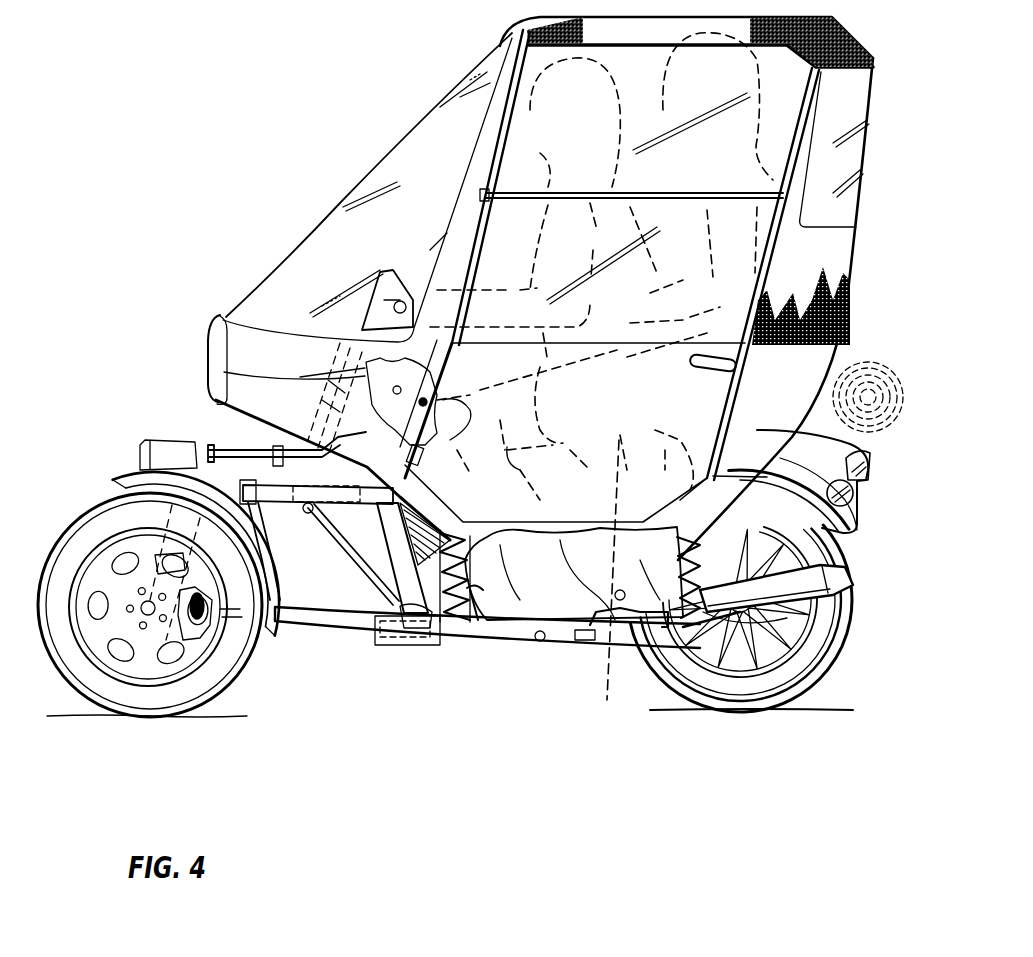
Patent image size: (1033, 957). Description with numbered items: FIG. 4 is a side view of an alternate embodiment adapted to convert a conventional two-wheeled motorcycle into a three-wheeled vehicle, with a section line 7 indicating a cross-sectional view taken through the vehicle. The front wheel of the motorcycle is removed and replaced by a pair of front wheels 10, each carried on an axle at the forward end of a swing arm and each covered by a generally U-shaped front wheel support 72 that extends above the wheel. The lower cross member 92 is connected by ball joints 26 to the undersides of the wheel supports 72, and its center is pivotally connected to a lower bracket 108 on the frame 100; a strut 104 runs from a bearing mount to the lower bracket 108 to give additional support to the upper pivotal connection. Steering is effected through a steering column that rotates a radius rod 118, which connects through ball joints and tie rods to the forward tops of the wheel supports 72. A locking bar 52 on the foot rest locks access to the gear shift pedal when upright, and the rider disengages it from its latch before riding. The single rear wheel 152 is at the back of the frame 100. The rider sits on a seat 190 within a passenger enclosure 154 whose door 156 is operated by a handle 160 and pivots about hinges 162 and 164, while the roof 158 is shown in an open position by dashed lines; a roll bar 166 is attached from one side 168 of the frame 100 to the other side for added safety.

The front wheel 10 is at (50, 550).
The ball joint 26 is at (203, 617).
The locking bar 52 is at (612, 660).
The front wheel support 72 is at (263, 541).
The lower cross member 92 is at (313, 632).
The frame 100 is at (362, 628).
The strut 104 is at (345, 548).
The lower bracket 108 is at (421, 630).
The radius rod 118 is at (262, 448).
The rear wheel 152 is at (825, 666).
The passenger enclosure 154 is at (228, 321).
The door 156 is at (847, 542).
The roof 158 is at (886, 362).
The handle 160 is at (871, 457).
The hinge 162 is at (482, 193).
The hinge 164 is at (210, 389).
The roll bar 166 is at (447, 247).
The side of frame 168 is at (209, 350).
The seat 190 is at (855, 487).
The section line 7- 7 is at (613, 461).